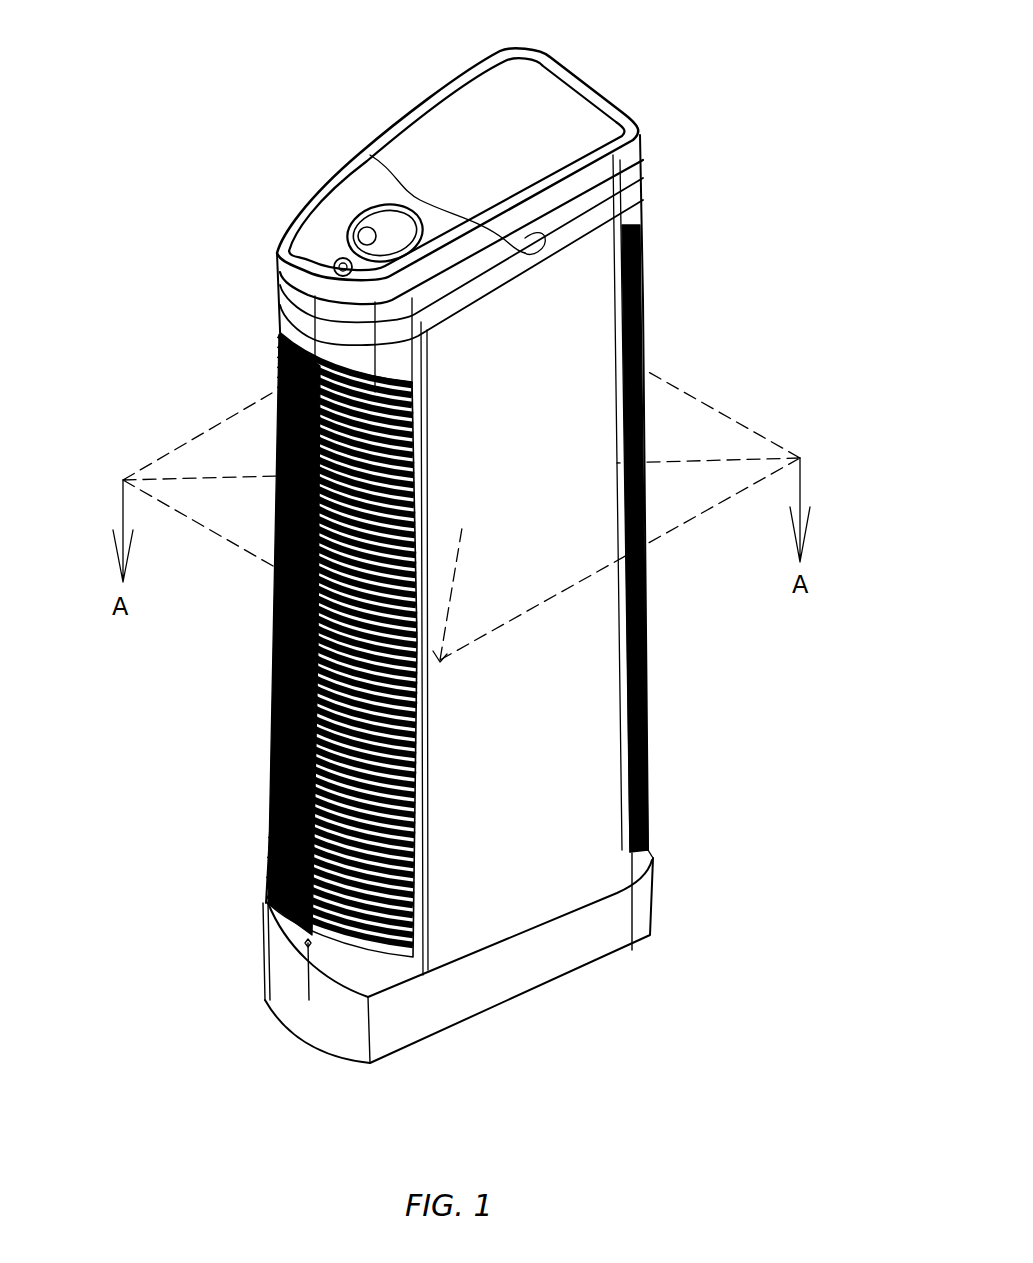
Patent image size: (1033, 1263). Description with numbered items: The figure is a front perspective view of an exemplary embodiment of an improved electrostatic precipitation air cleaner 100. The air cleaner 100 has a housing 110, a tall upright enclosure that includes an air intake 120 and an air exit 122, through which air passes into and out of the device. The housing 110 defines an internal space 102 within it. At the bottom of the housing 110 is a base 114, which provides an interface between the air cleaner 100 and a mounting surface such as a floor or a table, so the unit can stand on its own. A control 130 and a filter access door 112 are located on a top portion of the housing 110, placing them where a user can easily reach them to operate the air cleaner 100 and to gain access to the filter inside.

The electrostatic precipitation air cleaner 100 is at (695, 70).
The internal space 102 is at (528, 362).
The housing 110 is at (532, 808).
The filter access door 112 is at (473, 108).
The base 114 is at (523, 1015).
The air intake 120 is at (640, 665).
The air exit 122 is at (278, 742).
The control 130 is at (378, 224).